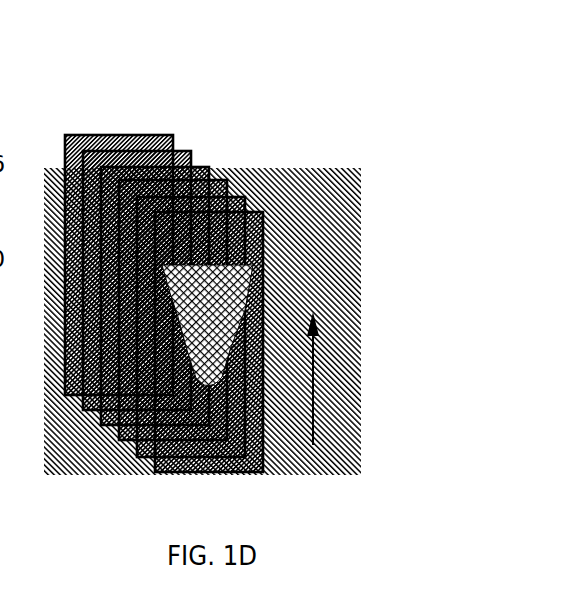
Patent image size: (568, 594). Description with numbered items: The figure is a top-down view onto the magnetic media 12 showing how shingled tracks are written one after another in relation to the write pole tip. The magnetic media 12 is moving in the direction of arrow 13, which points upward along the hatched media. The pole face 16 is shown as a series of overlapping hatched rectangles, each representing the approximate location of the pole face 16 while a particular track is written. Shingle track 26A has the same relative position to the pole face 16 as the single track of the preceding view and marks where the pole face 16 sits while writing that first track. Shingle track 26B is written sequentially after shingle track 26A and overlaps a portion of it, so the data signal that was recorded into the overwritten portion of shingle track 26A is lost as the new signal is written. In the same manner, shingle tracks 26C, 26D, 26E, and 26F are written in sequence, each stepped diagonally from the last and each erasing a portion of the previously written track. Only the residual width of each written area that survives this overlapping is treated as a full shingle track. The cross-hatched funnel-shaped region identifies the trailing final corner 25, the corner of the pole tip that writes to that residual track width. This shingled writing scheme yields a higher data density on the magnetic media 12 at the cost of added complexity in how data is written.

The magnetic media 12 is at (57, 427).
The arrow 13 is at (316, 366).
The pole face 16 is at (185, 323).
The trailing final corner 25 is at (258, 268).
The shingle track 26A is at (257, 212).
The shingle track 26B is at (239, 197).
The shingle track 26C is at (221, 180).
The shingle track 26D is at (203, 167).
The shingle track 26E is at (184, 151).
The shingle track 26F is at (158, 135).